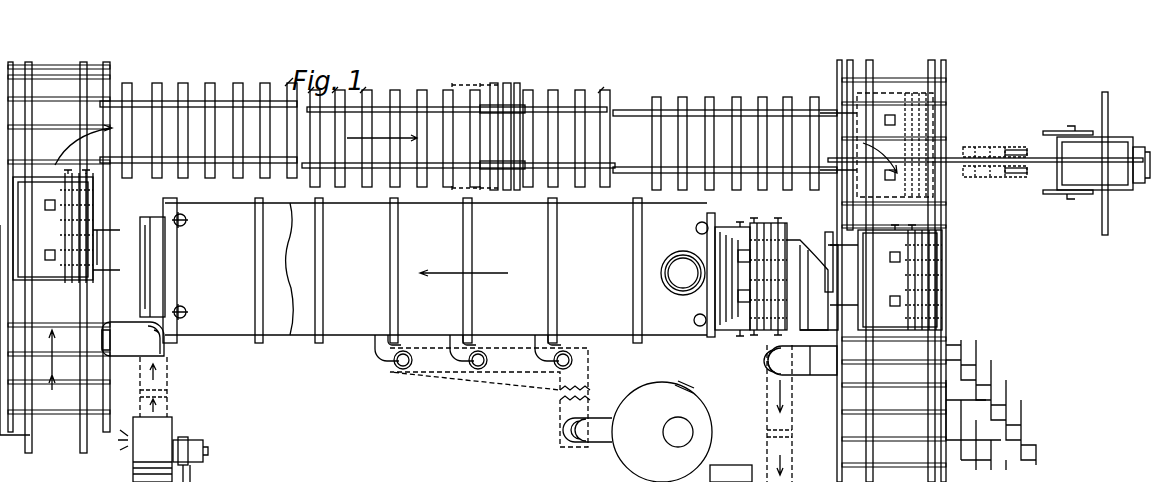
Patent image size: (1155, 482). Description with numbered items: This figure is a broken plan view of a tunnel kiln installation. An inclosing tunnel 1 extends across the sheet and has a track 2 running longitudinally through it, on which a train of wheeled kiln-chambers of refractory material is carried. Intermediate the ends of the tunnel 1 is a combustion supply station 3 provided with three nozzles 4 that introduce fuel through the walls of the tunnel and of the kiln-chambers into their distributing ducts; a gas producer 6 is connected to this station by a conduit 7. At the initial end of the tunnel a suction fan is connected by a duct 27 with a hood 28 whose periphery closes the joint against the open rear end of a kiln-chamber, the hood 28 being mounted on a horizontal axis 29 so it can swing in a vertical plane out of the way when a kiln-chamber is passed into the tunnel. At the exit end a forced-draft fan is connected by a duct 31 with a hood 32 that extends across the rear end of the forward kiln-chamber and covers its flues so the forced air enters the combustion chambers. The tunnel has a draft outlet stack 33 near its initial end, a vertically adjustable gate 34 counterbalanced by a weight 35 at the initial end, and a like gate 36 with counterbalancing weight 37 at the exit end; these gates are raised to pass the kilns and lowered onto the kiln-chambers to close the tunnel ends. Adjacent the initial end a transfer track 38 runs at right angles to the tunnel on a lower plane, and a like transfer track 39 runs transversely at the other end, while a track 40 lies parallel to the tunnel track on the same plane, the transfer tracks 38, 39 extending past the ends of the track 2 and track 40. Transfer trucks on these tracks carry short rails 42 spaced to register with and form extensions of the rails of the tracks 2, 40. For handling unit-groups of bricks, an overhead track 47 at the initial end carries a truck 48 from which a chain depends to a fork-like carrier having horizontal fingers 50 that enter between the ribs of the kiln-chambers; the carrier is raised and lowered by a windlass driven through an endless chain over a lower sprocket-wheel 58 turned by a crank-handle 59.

The inclosing tunnel 1 is at (236, 330).
The track 2 is at (800, 295).
The combustion supply station 3 is at (422, 372).
The nozzles 4 is at (375, 360).
The gas producer 6 is at (625, 462).
The conduit 7 is at (565, 410).
The duct 27 is at (792, 432).
The hood 28 is at (810, 290).
The horizontal axis 29 is at (828, 376).
The duct 31 is at (167, 404).
The hood 32 is at (115, 298).
The stack 33 is at (675, 290).
The gate 34 is at (735, 331).
The weight 35 is at (696, 228).
The gate 36 is at (185, 172).
The weight 37 is at (186, 222).
The transfer track 38 is at (925, 425).
The transfer track 39 is at (30, 430).
The track 40 is at (652, 112).
The rails 42 is at (942, 308).
The overhead track 47 is at (948, 157).
The truck 48 is at (990, 178).
The fingers or arms 50 is at (1005, 152).
The lower sprocket-wheel 58 is at (1040, 178).
The crank-handle 59 is at (1032, 155).